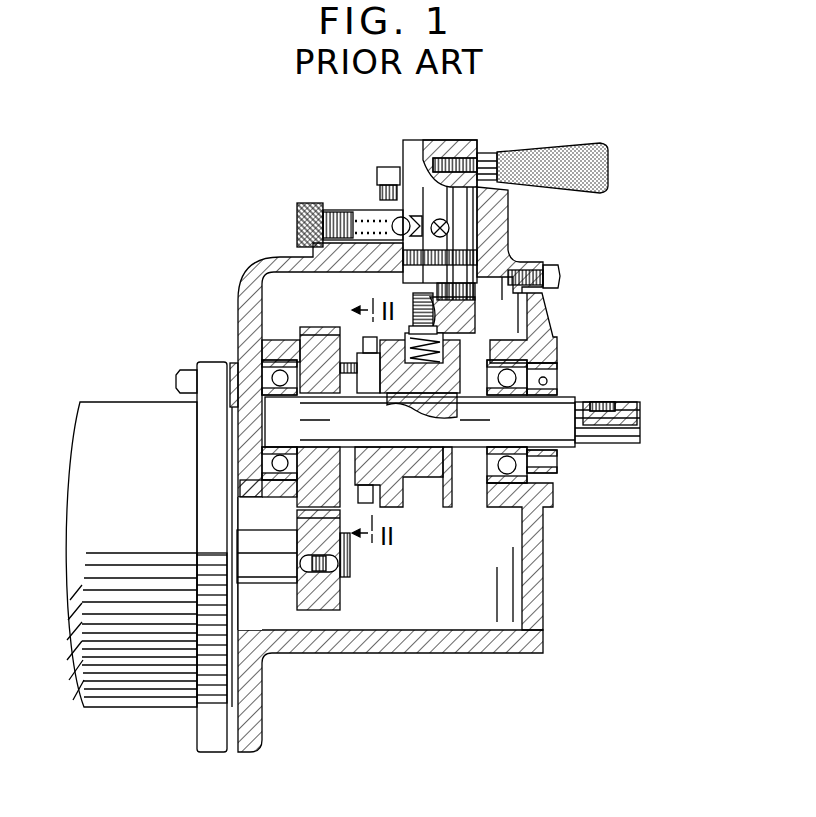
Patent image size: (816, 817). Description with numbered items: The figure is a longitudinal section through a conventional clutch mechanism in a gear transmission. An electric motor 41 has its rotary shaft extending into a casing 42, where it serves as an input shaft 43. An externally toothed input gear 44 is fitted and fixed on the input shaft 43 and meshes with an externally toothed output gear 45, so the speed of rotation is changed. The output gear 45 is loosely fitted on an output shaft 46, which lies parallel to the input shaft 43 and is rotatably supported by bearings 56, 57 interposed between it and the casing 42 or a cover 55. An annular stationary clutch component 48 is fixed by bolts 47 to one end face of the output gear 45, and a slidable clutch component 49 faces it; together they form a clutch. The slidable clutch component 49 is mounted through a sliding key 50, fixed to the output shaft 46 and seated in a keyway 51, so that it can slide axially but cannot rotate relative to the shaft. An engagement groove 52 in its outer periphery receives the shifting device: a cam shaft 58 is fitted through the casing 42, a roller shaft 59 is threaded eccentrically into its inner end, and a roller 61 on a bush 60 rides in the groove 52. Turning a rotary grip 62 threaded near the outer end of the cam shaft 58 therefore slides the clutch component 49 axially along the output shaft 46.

The electric motor 41 is at (128, 422).
The casing 42 is at (325, 643).
The input shaft 43 is at (272, 570).
The externally toothed input gear 44 is at (340, 606).
The externally toothed output gear 45 is at (318, 330).
The output shaft 46 is at (605, 424).
The bolts 47 is at (300, 370).
The stationary clutch component 48 is at (362, 492).
The slidable clutch component 49 is at (392, 497).
The sliding key 50 is at (420, 363).
The keyway 51 is at (448, 409).
The engagement groove 52 is at (430, 480).
The cover 55 is at (540, 603).
The bearing 56 is at (282, 482).
The bearing 57 is at (488, 463).
The cam shaft 58 is at (413, 148).
The roller shaft 59 is at (476, 322).
The bush 60 is at (443, 341).
The roller 61 is at (446, 369).
The rotary grip 62 is at (568, 150).